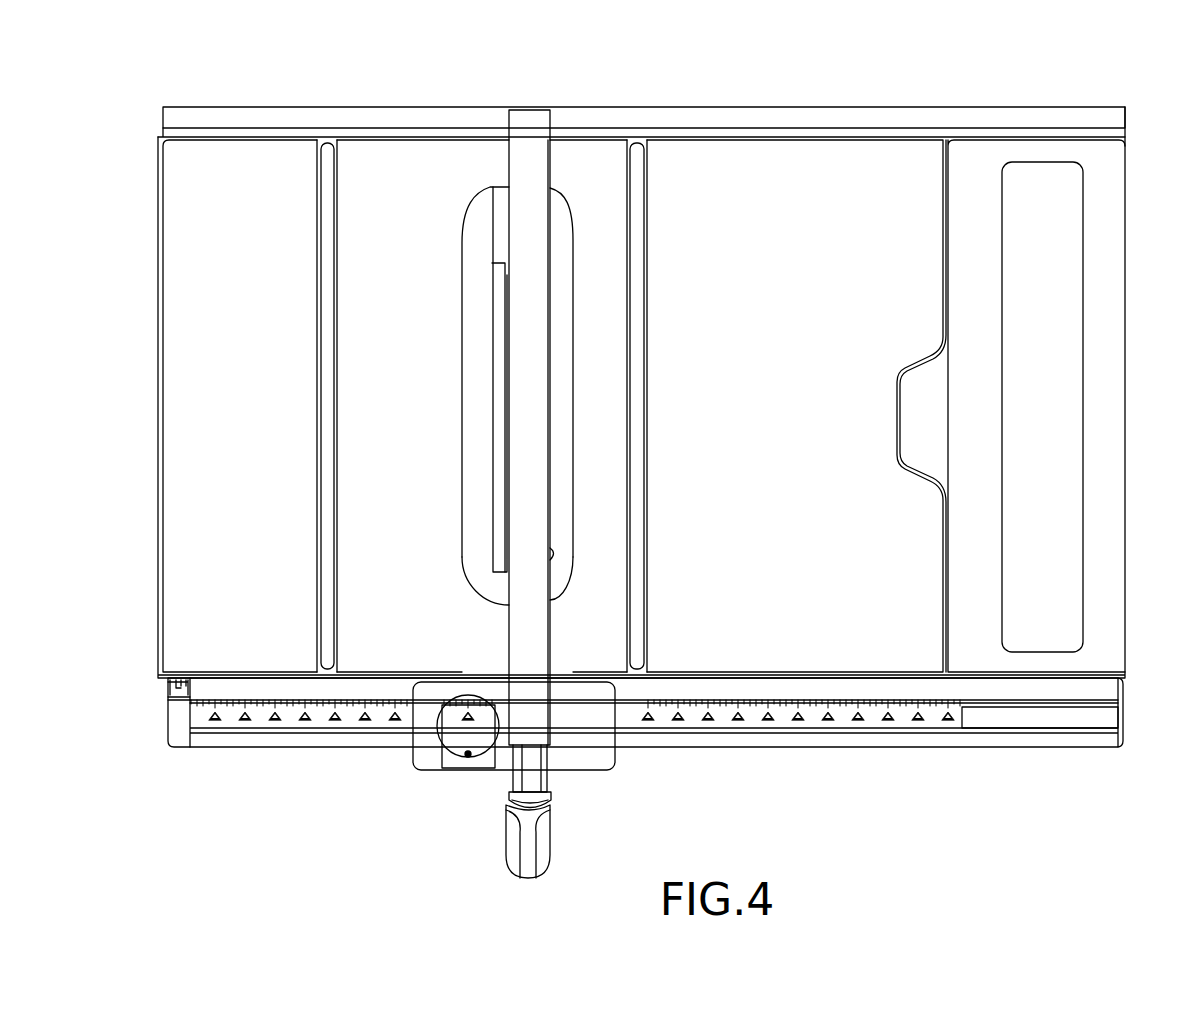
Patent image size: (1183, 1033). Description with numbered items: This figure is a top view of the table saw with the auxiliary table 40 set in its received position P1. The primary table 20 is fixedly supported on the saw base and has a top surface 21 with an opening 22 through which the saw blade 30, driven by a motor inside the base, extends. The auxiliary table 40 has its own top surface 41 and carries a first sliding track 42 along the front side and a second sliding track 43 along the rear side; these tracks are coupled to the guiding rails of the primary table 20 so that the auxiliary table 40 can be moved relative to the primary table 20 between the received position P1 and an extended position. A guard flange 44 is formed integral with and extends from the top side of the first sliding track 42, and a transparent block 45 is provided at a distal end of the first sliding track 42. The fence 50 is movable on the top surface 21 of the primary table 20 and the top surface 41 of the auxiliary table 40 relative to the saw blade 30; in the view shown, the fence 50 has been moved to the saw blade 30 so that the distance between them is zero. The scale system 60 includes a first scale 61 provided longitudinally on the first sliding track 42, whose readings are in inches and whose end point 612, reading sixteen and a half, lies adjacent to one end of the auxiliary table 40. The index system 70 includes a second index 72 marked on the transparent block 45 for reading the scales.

The primary table 20 is at (228, 162).
The top surface 21 is at (838, 150).
The opening 22 is at (489, 297).
The saw blade 30 is at (504, 273).
The auxiliary table 40 is at (1125, 222).
The top surface 41 is at (1061, 157).
The first sliding track 42 is at (1083, 718).
The second sliding track 43 is at (752, 113).
The guard flange 44 is at (1110, 690).
The transparent block 45 is at (170, 698).
The fence 50 is at (541, 172).
The scale system 60 is at (770, 718).
The first scale 61 is at (818, 714).
The end point 612 is at (963, 709).
The index system 70 is at (448, 722).
The second index 72 is at (168, 690).
The received position P1 is at (1020, 104).